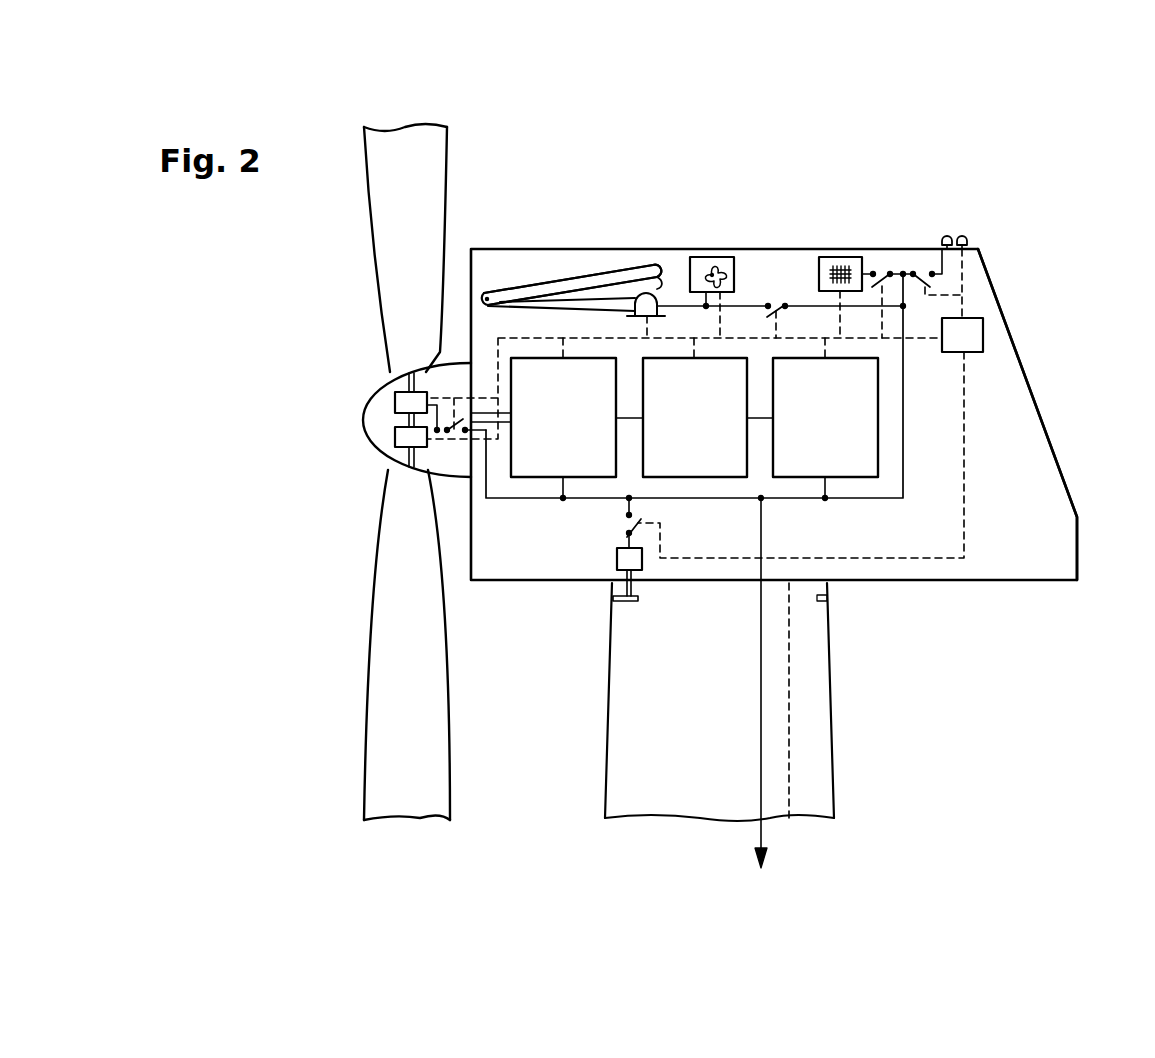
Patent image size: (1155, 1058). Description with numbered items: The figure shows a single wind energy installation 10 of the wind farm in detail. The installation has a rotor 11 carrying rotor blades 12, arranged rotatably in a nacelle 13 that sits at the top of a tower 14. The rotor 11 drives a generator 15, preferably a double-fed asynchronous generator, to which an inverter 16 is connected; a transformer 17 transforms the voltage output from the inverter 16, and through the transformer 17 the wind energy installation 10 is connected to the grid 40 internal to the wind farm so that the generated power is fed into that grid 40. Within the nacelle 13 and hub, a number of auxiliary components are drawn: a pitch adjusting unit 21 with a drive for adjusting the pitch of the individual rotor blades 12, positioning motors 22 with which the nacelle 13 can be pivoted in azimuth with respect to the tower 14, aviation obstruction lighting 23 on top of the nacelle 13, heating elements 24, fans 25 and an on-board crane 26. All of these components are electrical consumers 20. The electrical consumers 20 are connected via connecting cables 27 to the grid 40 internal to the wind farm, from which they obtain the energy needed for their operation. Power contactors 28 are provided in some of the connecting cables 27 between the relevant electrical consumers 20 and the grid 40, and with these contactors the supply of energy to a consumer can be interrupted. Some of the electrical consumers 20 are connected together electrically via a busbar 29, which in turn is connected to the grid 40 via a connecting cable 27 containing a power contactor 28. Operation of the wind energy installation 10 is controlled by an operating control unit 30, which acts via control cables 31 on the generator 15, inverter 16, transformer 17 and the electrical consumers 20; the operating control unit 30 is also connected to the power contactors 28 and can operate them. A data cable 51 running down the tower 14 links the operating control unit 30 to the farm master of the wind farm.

The wind energy installation 10 is at (1003, 285).
The rotor 11 is at (383, 322).
The rotor blades 12 is at (382, 210).
The nacelle 13 is at (1065, 557).
The tower 14 is at (835, 722).
The generator 15 is at (543, 428).
The inverter 16 is at (694, 417).
The transformer 17 is at (825, 428).
The electrical consumers 20 is at (561, 278).
The pitch adjusting unit 21 is at (408, 403).
The positioning motors 22 is at (626, 559).
The aviation obstruction lighting 23 is at (963, 235).
The heating elements 24 is at (833, 257).
The fans 25 is at (718, 257).
The on-board crane 26 is at (602, 279).
The connecting cables 27 is at (904, 389).
The power contactors 28 is at (768, 312).
The busbar 29 is at (677, 303).
The operating control unit 30 is at (984, 336).
The control cables 31 is at (966, 426).
The grid internal to the wind farm 40 is at (760, 832).
The data cables 51 is at (791, 778).